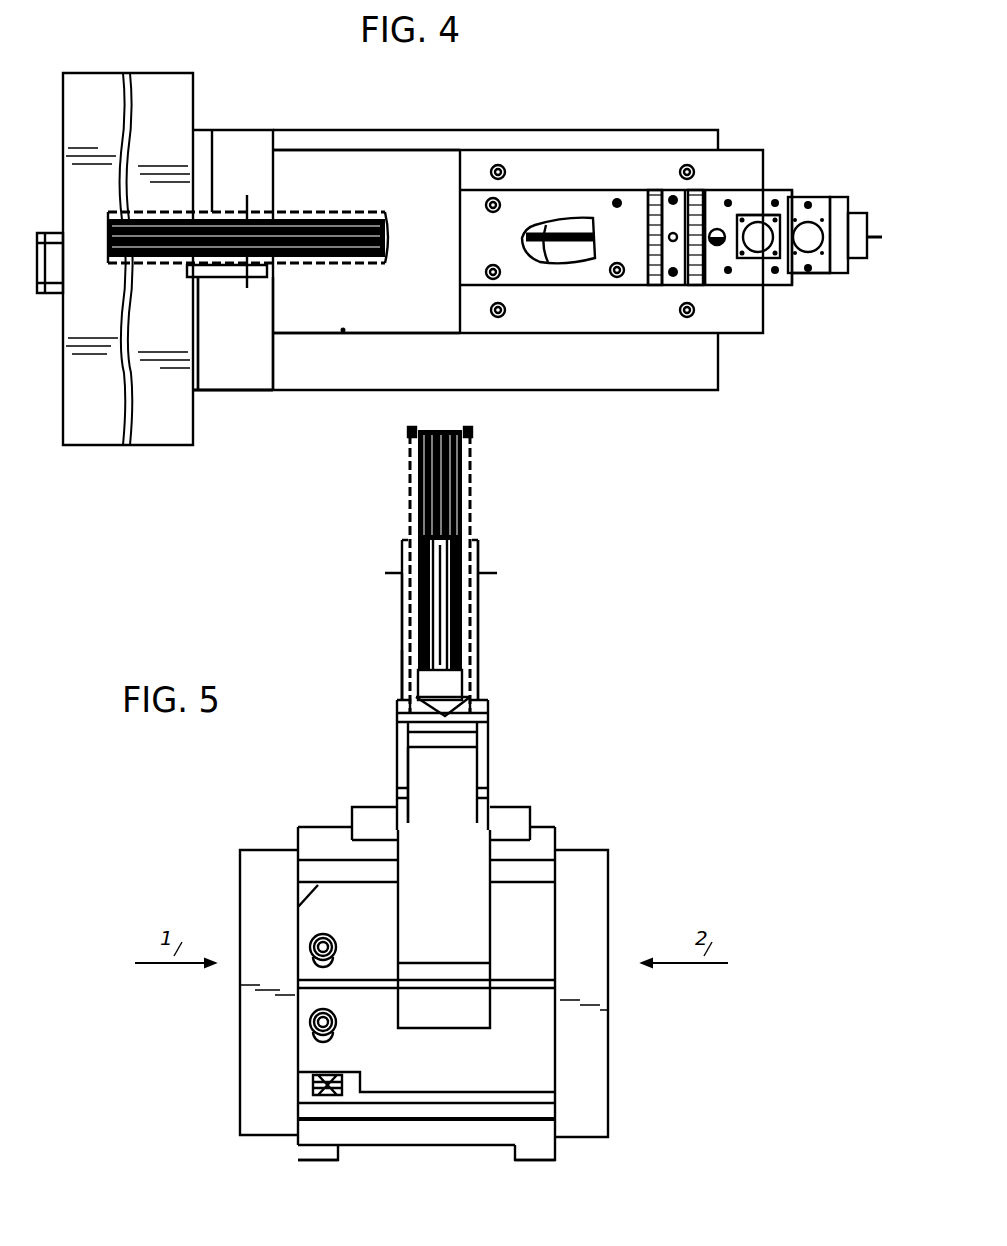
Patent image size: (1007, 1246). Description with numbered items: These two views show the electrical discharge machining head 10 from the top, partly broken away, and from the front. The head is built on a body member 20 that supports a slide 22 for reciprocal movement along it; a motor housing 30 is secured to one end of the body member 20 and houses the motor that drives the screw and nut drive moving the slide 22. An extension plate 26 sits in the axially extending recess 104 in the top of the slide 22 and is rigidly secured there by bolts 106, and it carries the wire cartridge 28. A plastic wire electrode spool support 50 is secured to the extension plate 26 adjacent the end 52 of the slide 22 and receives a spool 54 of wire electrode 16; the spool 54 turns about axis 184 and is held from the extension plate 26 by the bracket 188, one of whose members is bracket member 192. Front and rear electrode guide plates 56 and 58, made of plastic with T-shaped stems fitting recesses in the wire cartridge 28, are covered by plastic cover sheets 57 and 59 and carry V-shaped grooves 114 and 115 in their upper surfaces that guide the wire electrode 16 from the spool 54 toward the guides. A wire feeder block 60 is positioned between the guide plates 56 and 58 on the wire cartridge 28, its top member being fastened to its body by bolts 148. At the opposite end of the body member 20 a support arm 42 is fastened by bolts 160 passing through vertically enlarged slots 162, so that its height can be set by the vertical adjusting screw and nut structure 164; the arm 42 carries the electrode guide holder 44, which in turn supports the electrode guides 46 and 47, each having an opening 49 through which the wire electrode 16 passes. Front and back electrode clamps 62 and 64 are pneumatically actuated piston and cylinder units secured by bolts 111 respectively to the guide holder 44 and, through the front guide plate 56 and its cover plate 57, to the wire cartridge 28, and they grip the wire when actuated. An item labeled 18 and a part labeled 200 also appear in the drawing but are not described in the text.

In FIG. 4, the electrical discharge machining head 10 is at (345, 395).
In FIG. 5, the electrical discharge machining head 10 is at (610, 895).
In FIG. 4, the wire electrode 16 is at (876, 225).
In FIG. 5, the wire electrode 16 is at (425, 710).
In FIG. 5, the base foot 18 is at (535, 1162).
In FIG. 4, the body member 20 is at (225, 392).
In FIG. 5, the body member 20 is at (556, 1107).
In FIG. 4, the slide 22 is at (650, 392).
In FIG. 5, the slide 22 is at (556, 840).
In FIG. 4, the extension plate 26 is at (612, 338).
In FIG. 5, the extension plate 26 is at (534, 822).
In FIG. 4, the wire cartridge 28 is at (658, 285).
In FIG. 5, the wire cartridge 28 is at (488, 780).
In FIG. 4, the motor housing 30 is at (96, 445).
In FIG. 5, the motor housing 30 is at (608, 1075).
In FIG. 5, the support arm 42 is at (490, 915).
In FIG. 4, the electrode guide holder 44 is at (818, 275).
In FIG. 5, the electrode guide holder 44 is at (414, 775).
In FIG. 4, the electrode guide 46 is at (840, 273).
In FIG. 5, the electrode guide 46 is at (462, 678).
In FIG. 5, the electrode guide 47 is at (455, 735).
In FIG. 5, the opening 49 is at (460, 700).
In FIG. 4, the wire electrode spool support 50 is at (240, 277).
In FIG. 5, the wire electrode spool support 50 is at (402, 622).
In FIG. 4, the end of slide 52 is at (273, 335).
In FIG. 4, the wire spool 54 is at (338, 212).
In FIG. 5, the wire spool 54 is at (470, 460).
In FIG. 4, the front electrode guide plate 56 is at (717, 245).
In FIG. 5, the front electrode guide plate 56 is at (397, 723).
In FIG. 4, the cover plate 57 is at (762, 285).
In FIG. 4, the rear electrode guide plate 58 is at (560, 222).
In FIG. 4, the cover sheet 59 is at (520, 193).
In FIG. 4, the wire feeder block 60 is at (671, 172).
In FIG. 5, the wire feeder block 60 is at (488, 705).
In FIG. 4, the front electrode clamp 62 is at (808, 205).
In FIG. 5, the front electrode clamp 62 is at (478, 600).
In FIG. 4, the back electrode clamp 64 is at (760, 222).
In FIG. 4, the recess 104 is at (345, 332).
In FIG. 4, the bolts 106 is at (500, 318).
In FIG. 4, the bolts 111 is at (742, 220).
In FIG. 4, the V-shaped groove 114 is at (717, 229).
In FIG. 4, the V-shaped groove 115 is at (548, 262).
In FIG. 4, the bolts 148 is at (673, 280).
In FIG. 5, the bolts 160 is at (310, 1032).
In FIG. 5, the slots 162 is at (326, 1042).
In FIG. 5, the vertical adjusting screw and nut structure 164 is at (310, 1078).
In FIG. 4, the axis 184 is at (247, 195).
In FIG. 5, the axis 184 is at (482, 575).
In FIG. 4, the bracket 188 is at (200, 288).
In FIG. 5, the bracket 188 is at (402, 655).
In FIG. 4, the bracket member 192 is at (190, 282).
In FIG. 5, the bracket member 192 is at (402, 590).
In FIG. 4, the end nut 200 is at (63, 233).